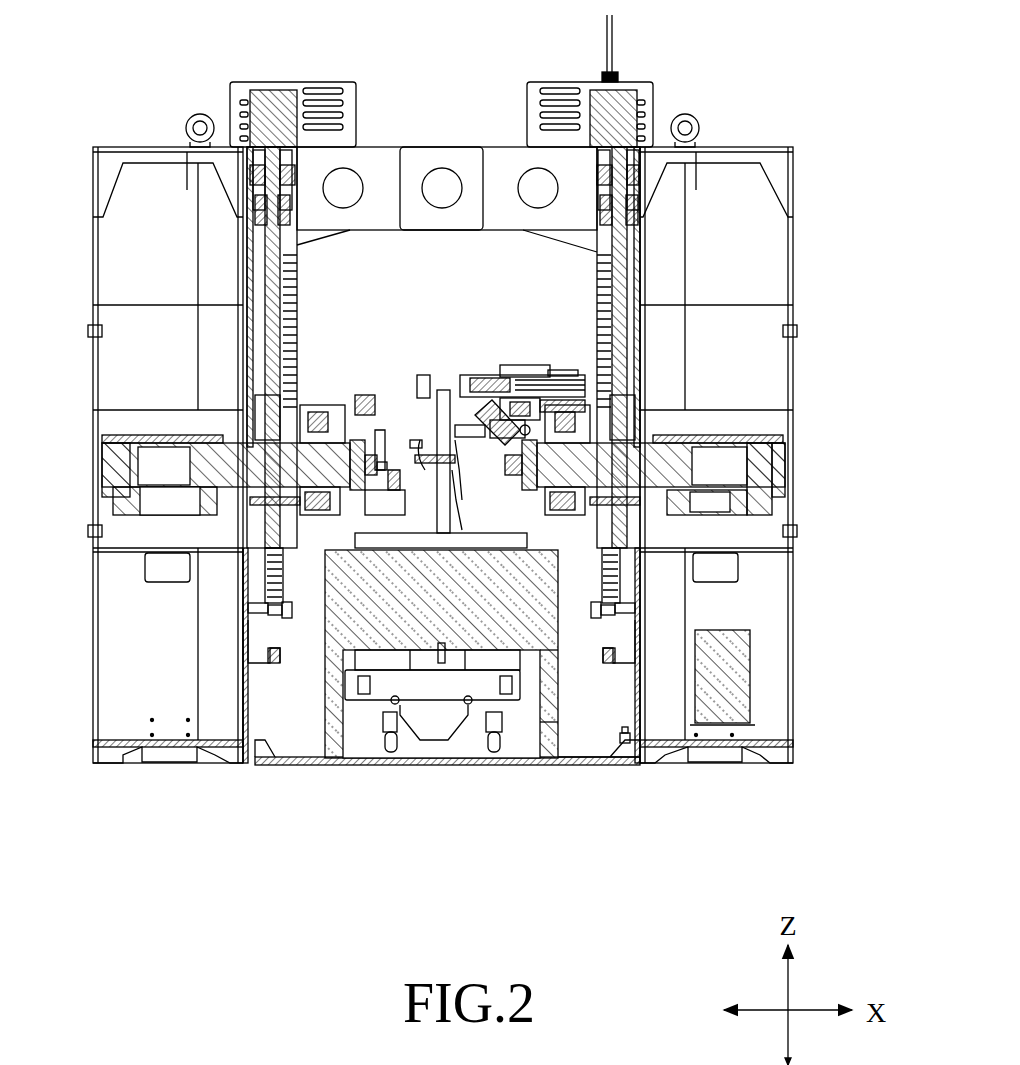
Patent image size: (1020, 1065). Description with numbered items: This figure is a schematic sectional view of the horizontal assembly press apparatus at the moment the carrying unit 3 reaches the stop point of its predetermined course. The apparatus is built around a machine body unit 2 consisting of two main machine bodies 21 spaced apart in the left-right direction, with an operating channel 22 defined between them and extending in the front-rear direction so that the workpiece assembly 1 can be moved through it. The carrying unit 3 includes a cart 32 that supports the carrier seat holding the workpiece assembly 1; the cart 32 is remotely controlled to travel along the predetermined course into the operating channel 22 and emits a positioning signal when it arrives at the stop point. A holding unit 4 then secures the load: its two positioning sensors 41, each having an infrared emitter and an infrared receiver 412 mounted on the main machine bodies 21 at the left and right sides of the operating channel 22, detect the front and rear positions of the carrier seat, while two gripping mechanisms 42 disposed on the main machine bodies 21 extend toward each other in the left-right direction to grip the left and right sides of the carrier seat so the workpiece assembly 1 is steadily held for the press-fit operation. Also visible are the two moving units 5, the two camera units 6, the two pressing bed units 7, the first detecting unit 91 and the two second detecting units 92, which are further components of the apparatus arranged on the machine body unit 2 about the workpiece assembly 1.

The workpiece assembly 1 is at (428, 373).
The machine body unit 2 is at (803, 170).
The carrying unit 3 is at (550, 727).
The holding unit 4 is at (243, 640).
The moving unit 5 is at (320, 395).
The camera unit 6 is at (403, 480).
The pressing bed unit 7 is at (373, 437).
The main machine body 21 is at (118, 597).
The operating channel 22 is at (598, 707).
The cart 32 is at (434, 735).
The positioning sensor 41 is at (272, 662).
The gripping mechanism 42 is at (275, 614).
The first detecting unit 91 is at (468, 414).
The second detecting unit 92 is at (525, 440).
The infrared receiver 412 is at (612, 660).